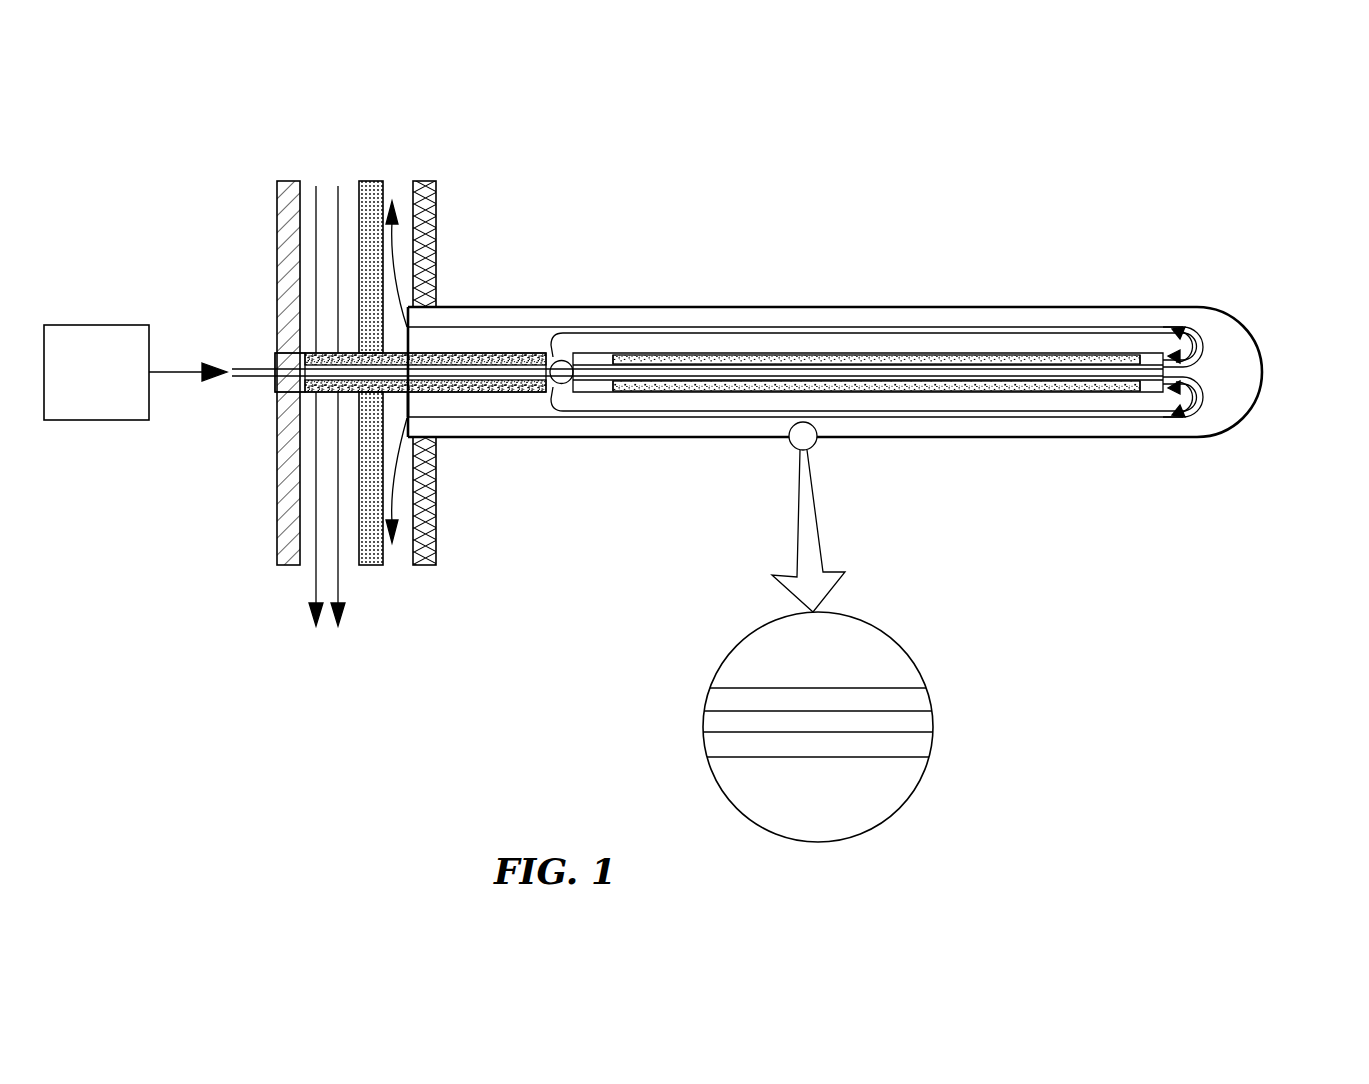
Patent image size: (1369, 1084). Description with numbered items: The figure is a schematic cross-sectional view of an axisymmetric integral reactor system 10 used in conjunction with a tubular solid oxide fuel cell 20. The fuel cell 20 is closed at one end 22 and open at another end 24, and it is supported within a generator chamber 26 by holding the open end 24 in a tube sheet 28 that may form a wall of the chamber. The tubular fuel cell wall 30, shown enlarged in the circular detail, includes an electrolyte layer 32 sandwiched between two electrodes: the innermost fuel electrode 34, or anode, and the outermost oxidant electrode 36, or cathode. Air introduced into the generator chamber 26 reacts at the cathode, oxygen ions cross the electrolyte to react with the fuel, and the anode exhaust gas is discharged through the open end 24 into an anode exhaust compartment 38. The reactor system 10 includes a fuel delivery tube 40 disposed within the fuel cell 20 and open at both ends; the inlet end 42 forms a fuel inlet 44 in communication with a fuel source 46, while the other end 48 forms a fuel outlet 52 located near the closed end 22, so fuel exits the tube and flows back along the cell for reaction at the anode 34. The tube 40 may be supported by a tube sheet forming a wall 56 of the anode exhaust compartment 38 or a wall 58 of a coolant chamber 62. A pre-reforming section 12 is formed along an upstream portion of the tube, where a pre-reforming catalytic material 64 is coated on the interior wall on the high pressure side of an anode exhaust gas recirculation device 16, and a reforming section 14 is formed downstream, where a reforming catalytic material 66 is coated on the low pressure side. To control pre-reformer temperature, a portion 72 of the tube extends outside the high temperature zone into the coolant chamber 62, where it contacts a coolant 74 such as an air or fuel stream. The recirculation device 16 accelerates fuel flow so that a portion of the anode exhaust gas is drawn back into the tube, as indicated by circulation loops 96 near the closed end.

The integral reactor system 10 is at (962, 322).
The pre-reforming section 12 is at (496, 353).
The reforming section 14 is at (738, 355).
The anode exhaust gas recirculation device 16 is at (566, 384).
The tubular solid oxide fuel cell 20 is at (1085, 438).
The closed end 22 is at (1218, 432).
The open end 24 is at (407, 405).
The generator chamber 26 is at (689, 168).
The tube sheet 28 is at (422, 181).
The tubular fuel cell wall 30 is at (900, 439).
The electrolyte layer 32 is at (930, 734).
The fuel electrode 34 is at (930, 702).
The oxidant electrode 36 is at (930, 750).
The anode exhaust compartment 38 is at (402, 552).
The fuel delivery tube 40 is at (985, 393).
The inlet end 42 is at (273, 381).
The fuel inlet 44 is at (273, 363).
The fuel source 46 is at (135, 372).
The outlet end 48 is at (1175, 360).
The fuel outlet 52 is at (1152, 383).
The wall of the anode exhaust compartment 56 is at (374, 181).
The wall of coolant chamber 58 is at (292, 181).
The coolant chamber 62 is at (325, 190).
The pre-reforming catalytic material 64 is at (500, 393).
The reforming catalytic material 66 is at (856, 355).
The portion of the tube 72 is at (328, 353).
The coolant 74 is at (315, 589).
The circulation loops 96 is at (1160, 418).